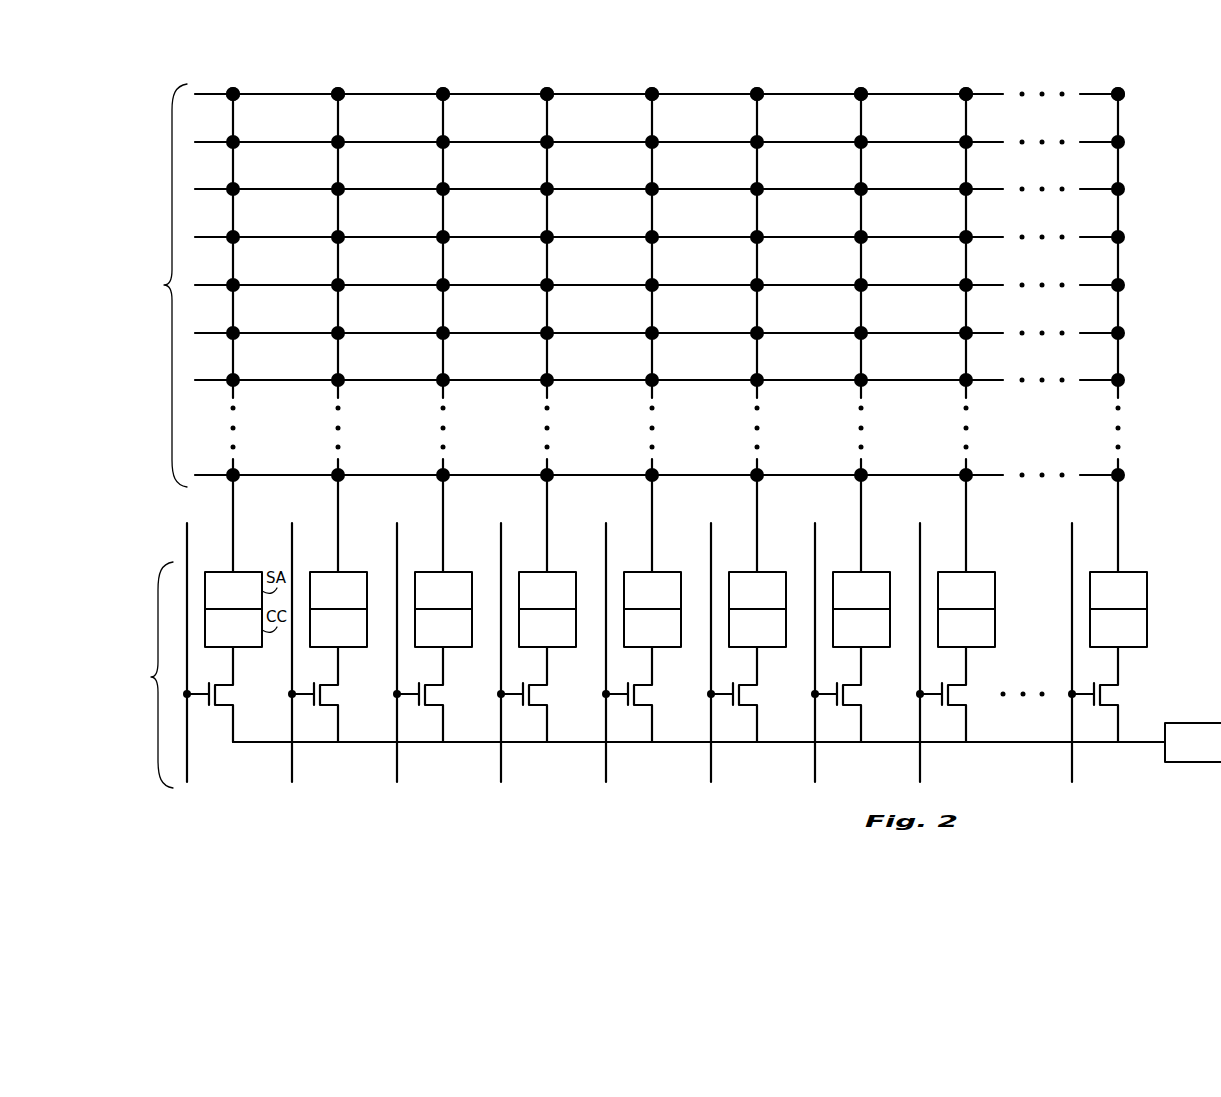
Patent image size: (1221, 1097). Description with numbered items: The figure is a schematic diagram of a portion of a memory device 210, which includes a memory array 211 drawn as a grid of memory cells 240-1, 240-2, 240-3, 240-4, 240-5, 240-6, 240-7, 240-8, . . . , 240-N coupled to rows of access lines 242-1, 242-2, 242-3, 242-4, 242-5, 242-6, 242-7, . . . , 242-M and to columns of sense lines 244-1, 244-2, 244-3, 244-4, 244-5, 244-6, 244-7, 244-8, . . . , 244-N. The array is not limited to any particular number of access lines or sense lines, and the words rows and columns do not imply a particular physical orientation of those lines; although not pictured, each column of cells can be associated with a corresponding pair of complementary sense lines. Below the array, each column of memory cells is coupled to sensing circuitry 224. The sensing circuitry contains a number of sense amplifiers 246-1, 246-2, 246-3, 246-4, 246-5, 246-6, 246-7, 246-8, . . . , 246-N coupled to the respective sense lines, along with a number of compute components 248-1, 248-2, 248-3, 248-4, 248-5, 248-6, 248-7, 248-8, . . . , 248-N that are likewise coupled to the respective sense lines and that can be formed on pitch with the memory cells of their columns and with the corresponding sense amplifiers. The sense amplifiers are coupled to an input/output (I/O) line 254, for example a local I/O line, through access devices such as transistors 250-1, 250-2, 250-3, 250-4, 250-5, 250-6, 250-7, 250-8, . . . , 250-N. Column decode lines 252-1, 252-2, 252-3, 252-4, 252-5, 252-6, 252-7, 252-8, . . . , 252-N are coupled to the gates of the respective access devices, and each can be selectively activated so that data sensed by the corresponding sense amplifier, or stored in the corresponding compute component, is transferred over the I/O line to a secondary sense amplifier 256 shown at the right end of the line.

The memory device 210 is at (198, 60).
The memory array 211 is at (160, 285).
The sensing circuitry 224 is at (148, 675).
The memory cell 240-1 is at (235, 88).
The memory cell 240-2 is at (340, 88).
The memory cell 240-3 is at (445, 88).
The memory cell 240-4 is at (549, 88).
The memory cell 240-5 is at (654, 88).
The memory cell 240-6 is at (759, 88).
The memory cell 240-7 is at (863, 88).
The memory cell 240-8 is at (968, 88).
The memory cell 240-N is at (1120, 88).
The access line 242-1 is at (273, 97).
The access line 242-2 is at (273, 145).
The access line 242-3 is at (273, 192).
The access line 242-4 is at (273, 240).
The access line 242-5 is at (273, 288).
The access line 242-6 is at (273, 336).
The access line 242-7 is at (273, 383).
The access line 242-M is at (273, 478).
The sense line 244-1 is at (234, 118).
The sense line 244-2 is at (339, 118).
The sense line 244-3 is at (444, 118).
The sense line 244-4 is at (548, 118).
The sense line 244-5 is at (653, 118).
The sense line 244-6 is at (758, 118).
The sense line 244-7 is at (862, 118).
The sense line 244-8 is at (967, 118).
The sense line 244-N is at (1119, 118).
The sense amplifier 246-1 is at (233, 590).
The sense amplifier 246-2 is at (338, 590).
The sense amplifier 246-3 is at (443, 590).
The sense amplifier 246-4 is at (547, 590).
The sense amplifier 246-5 is at (652, 590).
The sense amplifier 246-6 is at (757, 590).
The sense amplifier 246-7 is at (861, 590).
The sense amplifier 246-8 is at (966, 590).
The sense amplifier 246-N is at (1118, 590).
The compute component 248-1 is at (233, 628).
The compute component 248-2 is at (338, 628).
The compute component 248-3 is at (443, 628).
The compute component 248-4 is at (547, 628).
The compute component 248-5 is at (652, 628).
The compute component 248-6 is at (757, 628).
The compute component 248-7 is at (861, 628).
The compute component 248-8 is at (966, 628).
The compute component 248-N is at (1118, 628).
The access device 250-1 is at (259, 681).
The access device 250-2 is at (364, 681).
The access device 250-3 is at (469, 681).
The access device 250-4 is at (573, 681).
The access device 250-5 is at (678, 681).
The access device 250-6 is at (783, 681).
The access device 250-7 is at (887, 681).
The access device 250-8 is at (992, 681).
The access device 250-N is at (1144, 681).
The column decode line 252-1 is at (188, 763).
The column decode line 252-2 is at (293, 763).
The column decode line 252-3 is at (398, 763).
The column decode line 252-4 is at (502, 763).
The column decode line 252-5 is at (607, 763).
The column decode line 252-6 is at (712, 763).
The column decode line 252-7 is at (816, 763).
The column decode line 252-8 is at (921, 763).
The column decode line 252-N is at (1073, 763).
The input/output (I/O) line 254 is at (257, 742).
The secondary sense amplifier 256 is at (1189, 723).